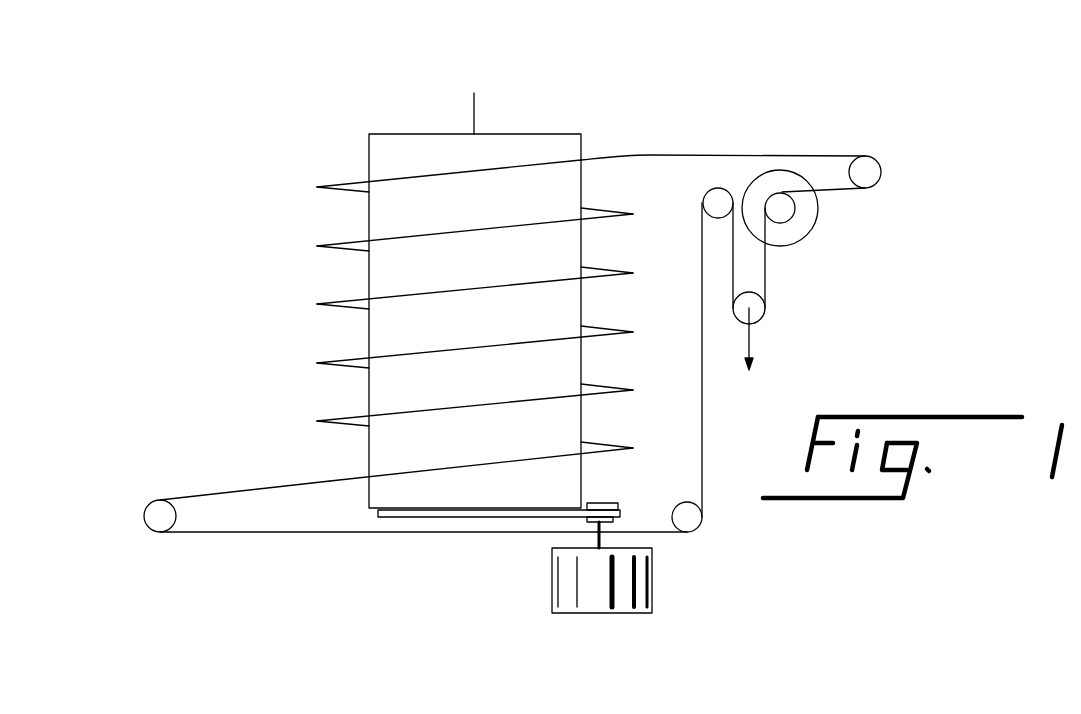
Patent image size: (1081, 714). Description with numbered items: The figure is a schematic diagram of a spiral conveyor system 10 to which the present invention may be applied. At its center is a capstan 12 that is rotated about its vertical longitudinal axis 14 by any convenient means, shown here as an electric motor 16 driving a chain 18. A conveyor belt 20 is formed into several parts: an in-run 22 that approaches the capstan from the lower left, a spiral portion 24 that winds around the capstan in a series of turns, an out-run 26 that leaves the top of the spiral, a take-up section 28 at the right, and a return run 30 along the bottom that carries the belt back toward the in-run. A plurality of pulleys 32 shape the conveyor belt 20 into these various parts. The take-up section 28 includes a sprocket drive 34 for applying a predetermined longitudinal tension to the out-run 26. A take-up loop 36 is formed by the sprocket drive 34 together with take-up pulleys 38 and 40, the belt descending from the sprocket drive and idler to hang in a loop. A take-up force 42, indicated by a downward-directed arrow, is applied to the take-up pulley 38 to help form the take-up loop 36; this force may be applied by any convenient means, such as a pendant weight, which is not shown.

The spiral conveyor system 10 is at (773, 104).
The capstan 12 is at (555, 134).
The vertical longitudinal axis 14 is at (474, 110).
The electric motor 16 is at (642, 583).
The chain 18 is at (472, 512).
The conveyor belt 20 is at (218, 488).
The in-run 22 is at (320, 479).
The spiral portion 24 is at (347, 357).
The out-run 26 is at (698, 155).
The take-up section 28 is at (886, 274).
The return run 30 is at (322, 528).
The pulleys 32 is at (162, 522).
The sprocket drive 34 is at (822, 218).
The take-up loop 36 is at (766, 267).
The take-up pulley 38 is at (760, 313).
The take-up pulley 40 is at (712, 197).
The take-up force 42 is at (750, 342).